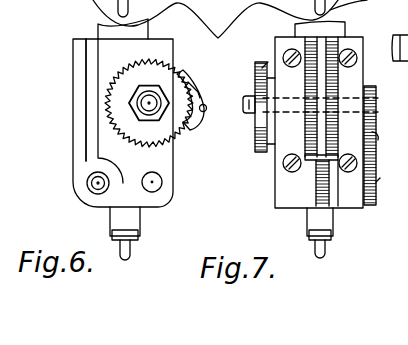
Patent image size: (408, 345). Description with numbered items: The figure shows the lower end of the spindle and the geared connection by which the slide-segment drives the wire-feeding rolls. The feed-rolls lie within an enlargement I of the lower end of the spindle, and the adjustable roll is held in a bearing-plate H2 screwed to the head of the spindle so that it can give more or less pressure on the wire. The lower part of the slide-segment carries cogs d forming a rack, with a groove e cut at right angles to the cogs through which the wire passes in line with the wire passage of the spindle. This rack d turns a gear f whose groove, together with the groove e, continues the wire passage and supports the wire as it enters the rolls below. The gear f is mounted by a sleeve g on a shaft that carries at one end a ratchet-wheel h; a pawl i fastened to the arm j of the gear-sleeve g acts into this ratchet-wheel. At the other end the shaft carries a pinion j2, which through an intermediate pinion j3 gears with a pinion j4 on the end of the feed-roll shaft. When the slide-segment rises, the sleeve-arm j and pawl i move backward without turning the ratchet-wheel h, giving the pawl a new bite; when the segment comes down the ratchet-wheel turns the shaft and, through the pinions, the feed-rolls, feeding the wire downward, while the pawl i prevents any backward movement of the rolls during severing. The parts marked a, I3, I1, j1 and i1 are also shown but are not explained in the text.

In FIG. 6, the spindle / shaft end a is at (129, 8).
In FIG. 7, the spindle / shaft end a is at (326, 7).
In FIG. 6, the bearing-plate H2 is at (73, 100).
In FIG. 6, the enlargement of the lower end of the spindle I is at (124, 70).
In FIG. 7, the enlargement of the lower end of the spindle I is at (348, 128).
In FIG. 6, the slide bar stem I3 is at (103, 225).
In FIG. 7, the slide bar stem I1 is at (296, 226).
In FIG. 6, the ratchet-wheel h is at (160, 79).
In FIG. 7, the ratchet-wheel h is at (254, 68).
In FIG. 6, the arm of the gear-sleeve j is at (195, 84).
In FIG. 7, the arm of the gear-sleeve j is at (267, 59).
In FIG. 6, the pawl i is at (205, 101).
In FIG. 7, the pawl i is at (247, 114).
In FIG. 7, the cogs d is at (352, 44).
In FIG. 7, the groove e is at (321, 97).
In FIG. 7, the gear f is at (318, 99).
In FIG. 7, the sleeve g is at (303, 94).
In FIG. 7, the pawl j1 is at (310, 128).
In FIG. 7, the pawl i1 is at (345, 184).
In FIG. 7, the pinion j2 is at (376, 108).
In FIG. 7, the intermediate pinion j3 is at (378, 144).
In FIG. 7, the pinion on the end of the feed-roll shaft j4 is at (374, 188).